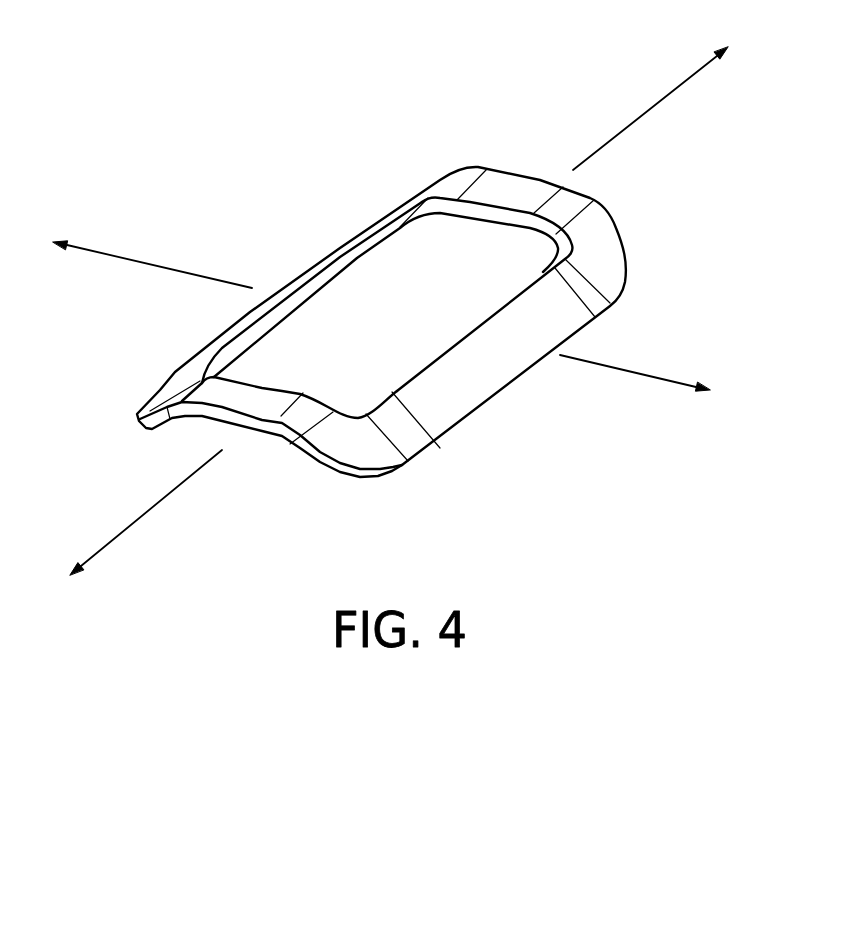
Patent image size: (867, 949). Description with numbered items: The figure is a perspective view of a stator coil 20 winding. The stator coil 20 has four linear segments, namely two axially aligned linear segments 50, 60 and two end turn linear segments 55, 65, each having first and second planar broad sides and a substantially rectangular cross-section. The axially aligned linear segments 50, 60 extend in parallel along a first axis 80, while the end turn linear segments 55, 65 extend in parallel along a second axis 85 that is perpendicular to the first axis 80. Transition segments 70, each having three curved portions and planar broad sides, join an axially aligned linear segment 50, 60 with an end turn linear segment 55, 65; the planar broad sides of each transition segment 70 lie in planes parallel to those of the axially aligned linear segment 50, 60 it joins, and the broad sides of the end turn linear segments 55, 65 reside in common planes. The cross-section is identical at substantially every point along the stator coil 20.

The stator coil 20 is at (274, 100).
The axially aligned linear segment 50 is at (508, 388).
The end turn linear segment 55 is at (514, 170).
The axially aligned linear segment 60 is at (281, 281).
The end turn linear segment 65 is at (243, 430).
The transition segment 70 is at (354, 479).
The first axis 80 is at (669, 98).
The second axis 85 is at (653, 381).